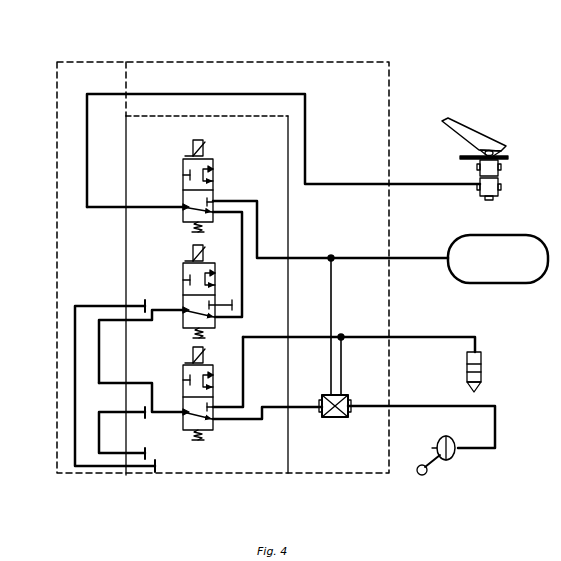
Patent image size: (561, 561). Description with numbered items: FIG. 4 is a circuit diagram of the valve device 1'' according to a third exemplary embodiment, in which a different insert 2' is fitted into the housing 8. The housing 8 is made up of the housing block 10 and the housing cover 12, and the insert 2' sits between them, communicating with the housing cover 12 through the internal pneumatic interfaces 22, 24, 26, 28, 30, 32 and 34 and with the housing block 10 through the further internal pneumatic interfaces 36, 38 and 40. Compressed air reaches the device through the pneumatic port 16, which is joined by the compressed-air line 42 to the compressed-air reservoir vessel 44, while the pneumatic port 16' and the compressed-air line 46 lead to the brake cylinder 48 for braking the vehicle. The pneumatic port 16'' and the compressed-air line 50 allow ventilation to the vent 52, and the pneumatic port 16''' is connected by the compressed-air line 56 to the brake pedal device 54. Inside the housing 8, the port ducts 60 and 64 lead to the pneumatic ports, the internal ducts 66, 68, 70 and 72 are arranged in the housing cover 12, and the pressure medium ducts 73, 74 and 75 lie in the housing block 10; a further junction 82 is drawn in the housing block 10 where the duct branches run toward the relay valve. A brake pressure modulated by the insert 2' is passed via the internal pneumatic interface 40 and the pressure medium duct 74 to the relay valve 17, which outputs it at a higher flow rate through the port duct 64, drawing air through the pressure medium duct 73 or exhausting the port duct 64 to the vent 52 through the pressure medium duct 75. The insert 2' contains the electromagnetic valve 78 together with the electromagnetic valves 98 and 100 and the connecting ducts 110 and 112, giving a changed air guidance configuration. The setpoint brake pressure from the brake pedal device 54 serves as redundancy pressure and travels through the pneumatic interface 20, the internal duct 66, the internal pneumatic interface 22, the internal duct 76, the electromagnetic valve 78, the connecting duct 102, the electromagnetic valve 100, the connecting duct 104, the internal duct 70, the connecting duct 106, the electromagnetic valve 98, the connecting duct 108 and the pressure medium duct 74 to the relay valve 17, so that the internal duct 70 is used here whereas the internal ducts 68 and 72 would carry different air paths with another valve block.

The housing 8 is at (129, 52).
The valve device 1'' is at (415, 27).
The housing cover 12 is at (72, 95).
The housing block 10 is at (345, 92).
The insert 2' is at (207, 91).
The internal pneumatic interface 38 is at (290, 255).
The pneumatic interface 20 is at (125, 91).
The internal duct 66 is at (86, 158).
The internal duct 68 is at (224, 93).
The compressed-air line 56 is at (445, 186).
The pneumatic port 16''' is at (410, 171).
The brake pedal device 54 is at (518, 147).
The internal pneumatic interface 22 is at (124, 209).
The internal duct 76 is at (160, 209).
The electromagnetic valve 78 is at (183, 190).
The connecting duct 110 is at (251, 200).
The connecting duct 102 is at (244, 290).
The port duct 60 is at (332, 255).
The pneumatic port 16 is at (389, 246).
The compressed-air line 42 is at (416, 260).
The compressed-air reservoir vessel 44 is at (498, 259).
The pressure medium duct 73 is at (333, 284).
The node 82 is at (340, 334).
The pressure medium duct 75 is at (343, 396).
The internal pneumatic interface 36 is at (291, 341).
The compressed-air line 50 is at (434, 336).
The pneumatic port 16'' is at (410, 351).
The vent 52 is at (483, 368).
The compressed-air line 46 is at (419, 405).
The pneumatic port 16' is at (409, 421).
The brake cylinder 48 is at (450, 462).
The relay valve 17 is at (336, 419).
The pressure medium duct 74 is at (304, 404).
The port duct 64 is at (352, 418).
The internal pneumatic interface 40 is at (292, 410).
The connecting duct 108 is at (243, 421).
The connecting duct 112 is at (246, 385).
The connecting duct 106 is at (193, 414).
The electromagnetic valve 98 is at (183, 376).
The electromagnetic valve 100 is at (183, 282).
The connecting duct 104 is at (163, 312).
The internal pneumatic interface 26 is at (124, 322).
The internal pneumatic interface 28 is at (124, 381).
The internal duct 70 is at (99, 374).
The internal pneumatic interface 24 is at (124, 304).
The internal duct 72 is at (99, 420).
The internal pneumatic interface 30 is at (120, 415).
The internal pneumatic interface 32 is at (123, 457).
The internal pneumatic interface 34 is at (124, 471).